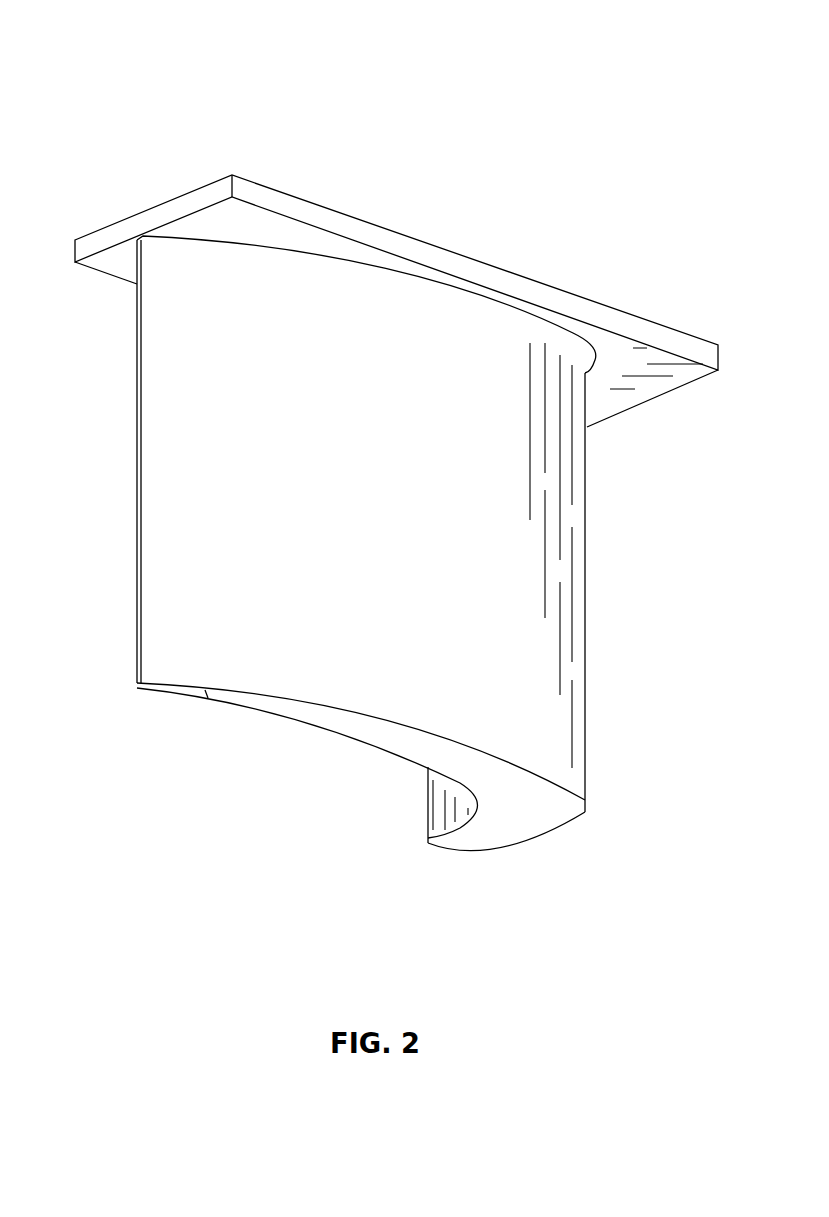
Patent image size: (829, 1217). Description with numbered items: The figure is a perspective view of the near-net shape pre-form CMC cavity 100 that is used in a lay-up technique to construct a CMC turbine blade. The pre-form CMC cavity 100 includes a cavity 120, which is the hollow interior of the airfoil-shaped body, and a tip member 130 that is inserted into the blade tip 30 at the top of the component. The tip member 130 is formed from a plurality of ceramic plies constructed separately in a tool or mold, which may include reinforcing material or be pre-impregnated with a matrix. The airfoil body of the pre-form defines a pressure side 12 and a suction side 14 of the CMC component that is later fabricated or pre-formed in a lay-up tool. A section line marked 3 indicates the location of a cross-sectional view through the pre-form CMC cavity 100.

The pre-form CMC cavity 100 is at (385, 471).
The tip member 130 is at (497, 270).
The suction side 14 is at (378, 586).
The blade tip 30 is at (240, 262).
The pressure side 12 is at (227, 705).
The cavity 120 is at (528, 830).
The section line 3- 3 is at (383, 207).